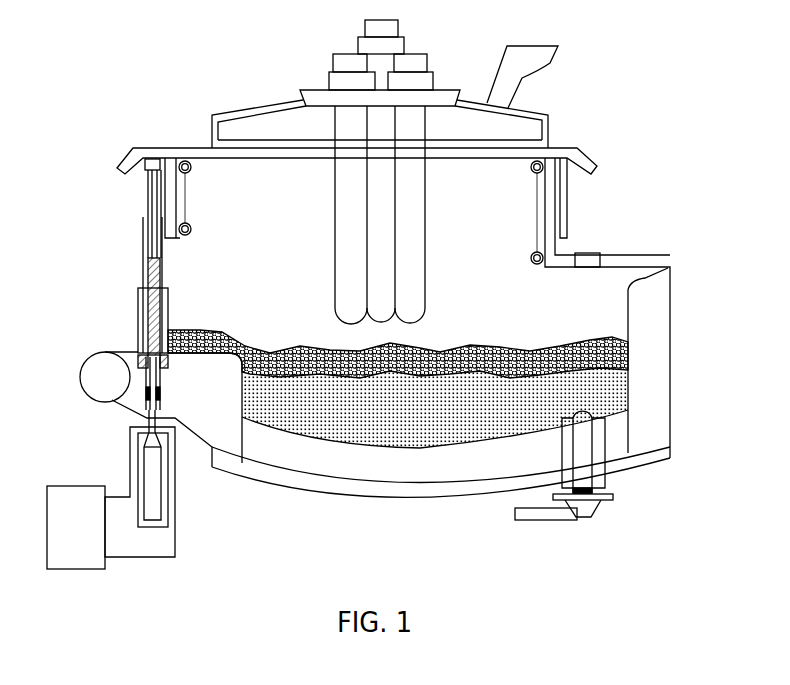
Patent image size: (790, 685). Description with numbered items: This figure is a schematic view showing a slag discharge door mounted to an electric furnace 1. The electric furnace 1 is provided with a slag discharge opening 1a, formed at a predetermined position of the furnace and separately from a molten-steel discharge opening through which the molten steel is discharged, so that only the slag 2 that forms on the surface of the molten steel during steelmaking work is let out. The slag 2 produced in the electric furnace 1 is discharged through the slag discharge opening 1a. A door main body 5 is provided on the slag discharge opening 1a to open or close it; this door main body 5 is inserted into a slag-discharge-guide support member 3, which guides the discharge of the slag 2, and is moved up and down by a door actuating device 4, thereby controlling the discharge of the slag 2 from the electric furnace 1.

The electric furnace 1 is at (588, 70).
The slag discharge opening 1a is at (173, 265).
The slag 2 is at (614, 345).
The slag-discharge-guide support member 3 is at (128, 403).
The door actuating device 4 is at (157, 487).
The door main body 5 is at (146, 323).